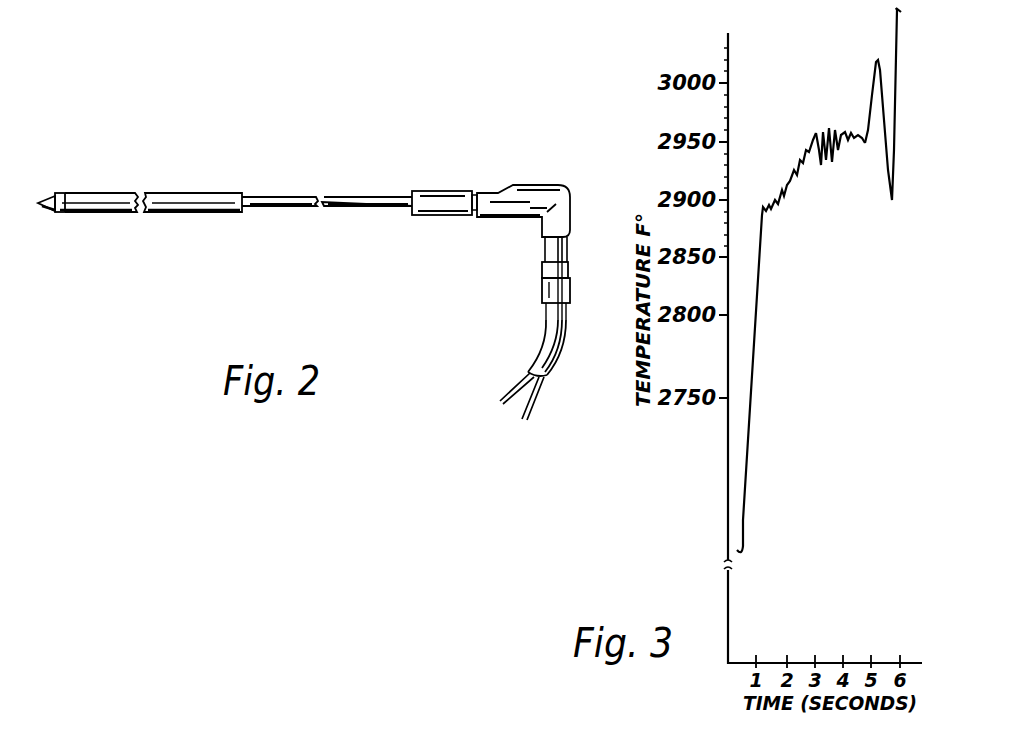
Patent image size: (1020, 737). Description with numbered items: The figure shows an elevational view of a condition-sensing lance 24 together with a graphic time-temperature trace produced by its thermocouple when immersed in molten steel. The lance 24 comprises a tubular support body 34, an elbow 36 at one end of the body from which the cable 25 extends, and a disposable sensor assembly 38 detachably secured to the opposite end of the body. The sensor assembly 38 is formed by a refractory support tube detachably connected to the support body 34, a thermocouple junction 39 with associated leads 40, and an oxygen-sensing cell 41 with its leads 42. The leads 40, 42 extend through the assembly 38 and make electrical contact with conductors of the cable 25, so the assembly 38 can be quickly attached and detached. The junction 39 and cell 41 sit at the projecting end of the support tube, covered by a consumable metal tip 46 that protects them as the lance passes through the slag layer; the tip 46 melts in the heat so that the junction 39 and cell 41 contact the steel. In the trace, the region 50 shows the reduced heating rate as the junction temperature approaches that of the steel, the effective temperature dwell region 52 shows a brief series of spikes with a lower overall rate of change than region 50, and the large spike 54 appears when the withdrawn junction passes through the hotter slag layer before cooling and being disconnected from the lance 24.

In FIG. 2, the lance 24 is at (334, 169).
In FIG. 2, the cable 25 is at (540, 345).
In FIG. 2, the tubular support body 34 is at (290, 208).
In FIG. 2, the elbow 36 is at (537, 184).
In FIG. 2, the disposable sensor assembly 38 is at (164, 214).
In FIG. 2, the thermocouple junction 39 is at (46, 203).
In FIG. 2, the leads 40 is at (517, 386).
In FIG. 2, the oxygen-sensing cell 41 is at (57, 214).
In FIG. 2, the leads 42 is at (533, 406).
In FIG. 2, the consumable metal tip 46 is at (44, 207).
In FIG. 3, the region of reduced heating rate 50 is at (812, 153).
In FIG. 3, the effective temperature dwell region 52 is at (865, 125).
In FIG. 3, the temperature spike 54 is at (873, 75).